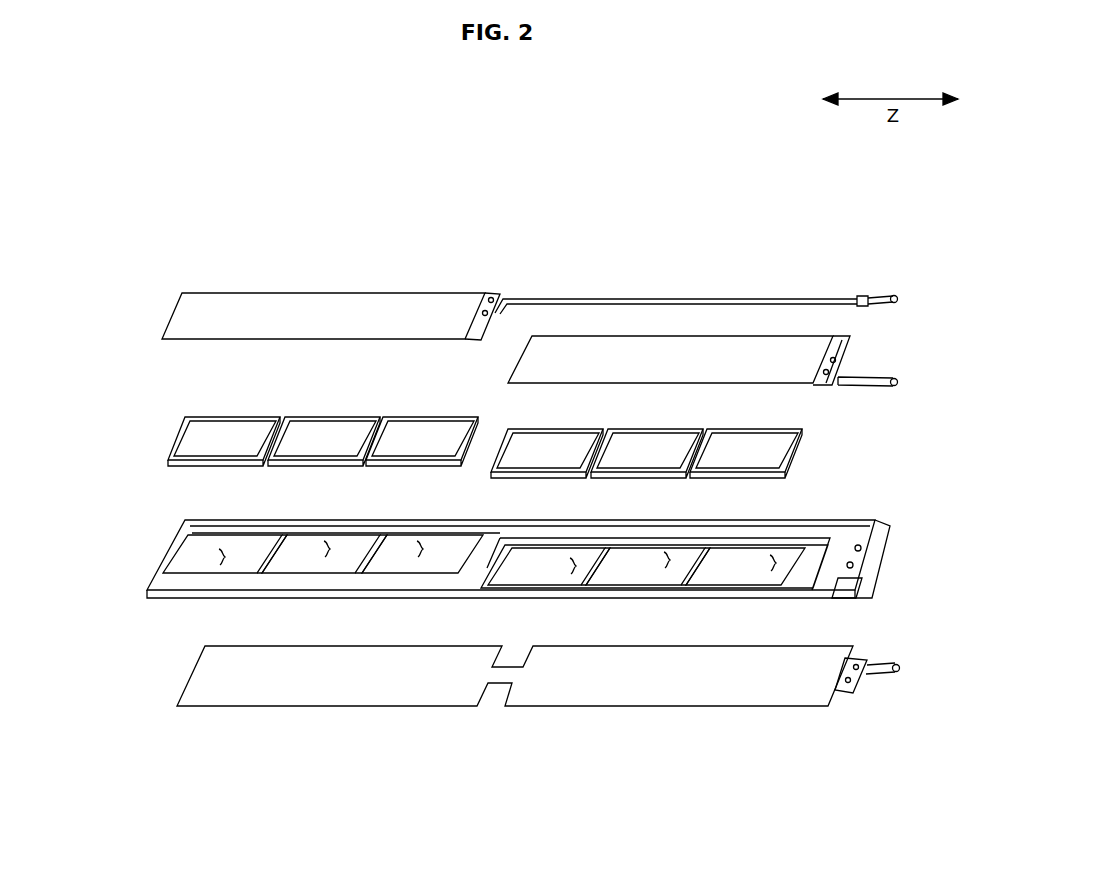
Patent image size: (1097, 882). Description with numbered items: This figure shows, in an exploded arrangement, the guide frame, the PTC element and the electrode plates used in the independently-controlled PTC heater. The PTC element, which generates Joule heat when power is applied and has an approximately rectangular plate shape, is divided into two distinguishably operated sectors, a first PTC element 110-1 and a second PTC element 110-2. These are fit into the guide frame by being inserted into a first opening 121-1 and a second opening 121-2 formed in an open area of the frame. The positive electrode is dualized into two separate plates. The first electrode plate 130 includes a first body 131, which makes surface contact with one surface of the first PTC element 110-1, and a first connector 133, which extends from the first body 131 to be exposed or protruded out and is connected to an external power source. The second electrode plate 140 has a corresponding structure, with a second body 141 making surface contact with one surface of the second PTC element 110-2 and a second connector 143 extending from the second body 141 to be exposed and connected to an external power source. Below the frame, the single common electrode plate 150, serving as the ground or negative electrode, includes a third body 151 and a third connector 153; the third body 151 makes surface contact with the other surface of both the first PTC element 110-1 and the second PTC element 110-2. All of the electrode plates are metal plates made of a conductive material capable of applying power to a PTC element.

The first PTC element 110-1 is at (773, 450).
The second PTC element 110-2 is at (213, 441).
The first opening 121-1 is at (573, 566).
The second opening 121-2 is at (420, 549).
The first electrode plate 130 is at (847, 215).
The first body 131 is at (690, 350).
The first connector 133 is at (838, 358).
The second electrode plate 140 is at (405, 215).
The second body 141 is at (398, 308).
The second connector 143 is at (566, 296).
The common electrode plate 150 is at (837, 810).
The third body 151 is at (442, 688).
The third connector 153 is at (880, 678).